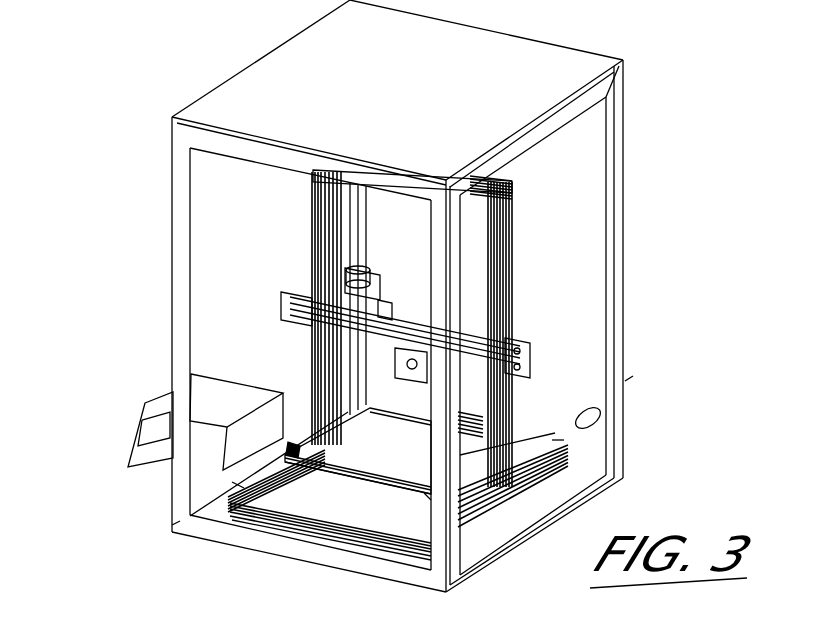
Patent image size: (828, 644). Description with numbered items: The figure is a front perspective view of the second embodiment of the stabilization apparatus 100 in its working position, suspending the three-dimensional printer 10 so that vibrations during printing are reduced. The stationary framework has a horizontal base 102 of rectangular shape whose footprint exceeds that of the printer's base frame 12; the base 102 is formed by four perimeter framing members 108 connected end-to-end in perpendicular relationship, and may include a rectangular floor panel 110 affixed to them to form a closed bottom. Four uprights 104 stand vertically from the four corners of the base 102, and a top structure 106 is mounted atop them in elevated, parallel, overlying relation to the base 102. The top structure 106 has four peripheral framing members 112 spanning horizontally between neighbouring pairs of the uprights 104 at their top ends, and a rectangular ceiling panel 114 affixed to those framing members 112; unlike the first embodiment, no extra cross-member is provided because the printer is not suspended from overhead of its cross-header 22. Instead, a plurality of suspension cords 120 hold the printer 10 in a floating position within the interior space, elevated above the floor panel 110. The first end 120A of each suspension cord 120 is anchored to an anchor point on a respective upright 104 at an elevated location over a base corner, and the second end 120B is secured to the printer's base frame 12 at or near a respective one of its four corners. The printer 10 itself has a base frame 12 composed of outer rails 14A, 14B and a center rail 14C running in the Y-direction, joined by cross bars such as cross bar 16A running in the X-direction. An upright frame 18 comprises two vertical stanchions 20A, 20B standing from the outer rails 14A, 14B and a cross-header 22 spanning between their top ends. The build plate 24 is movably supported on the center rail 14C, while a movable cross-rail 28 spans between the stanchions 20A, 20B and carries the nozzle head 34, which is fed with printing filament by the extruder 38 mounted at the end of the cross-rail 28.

The stabilization apparatus 100 is at (96, 150).
The 3D printer 10 is at (272, 238).
The horizontal base frame 12 is at (293, 440).
The outer rail 14A is at (291, 478).
The outer rail 14B is at (562, 486).
The center rail 14C is at (355, 515).
The cross bar 16A is at (303, 522).
The upright frame 18 is at (303, 263).
The vertical stanchion 20A is at (313, 210).
The vertical stanchion 20B is at (511, 287).
The cross-header 22 is at (484, 178).
The build plate 24 is at (403, 452).
The movable cross-rail 28 is at (393, 322).
The nozzle head 34 is at (422, 368).
The extruder 38 is at (372, 272).
The horizontal base 102 is at (249, 556).
The uprights 104 is at (176, 256).
The top structure 106 is at (616, 90).
The perimeter framing members 108 is at (329, 559).
The floor panel 110 is at (600, 462).
The peripheral framing members 112 is at (540, 137).
The ceiling panel 114 is at (378, 100).
The suspension cords 120 is at (375, 405).
The first end of suspension cord 120A is at (170, 426).
The second end of suspension cord 120B is at (238, 485).